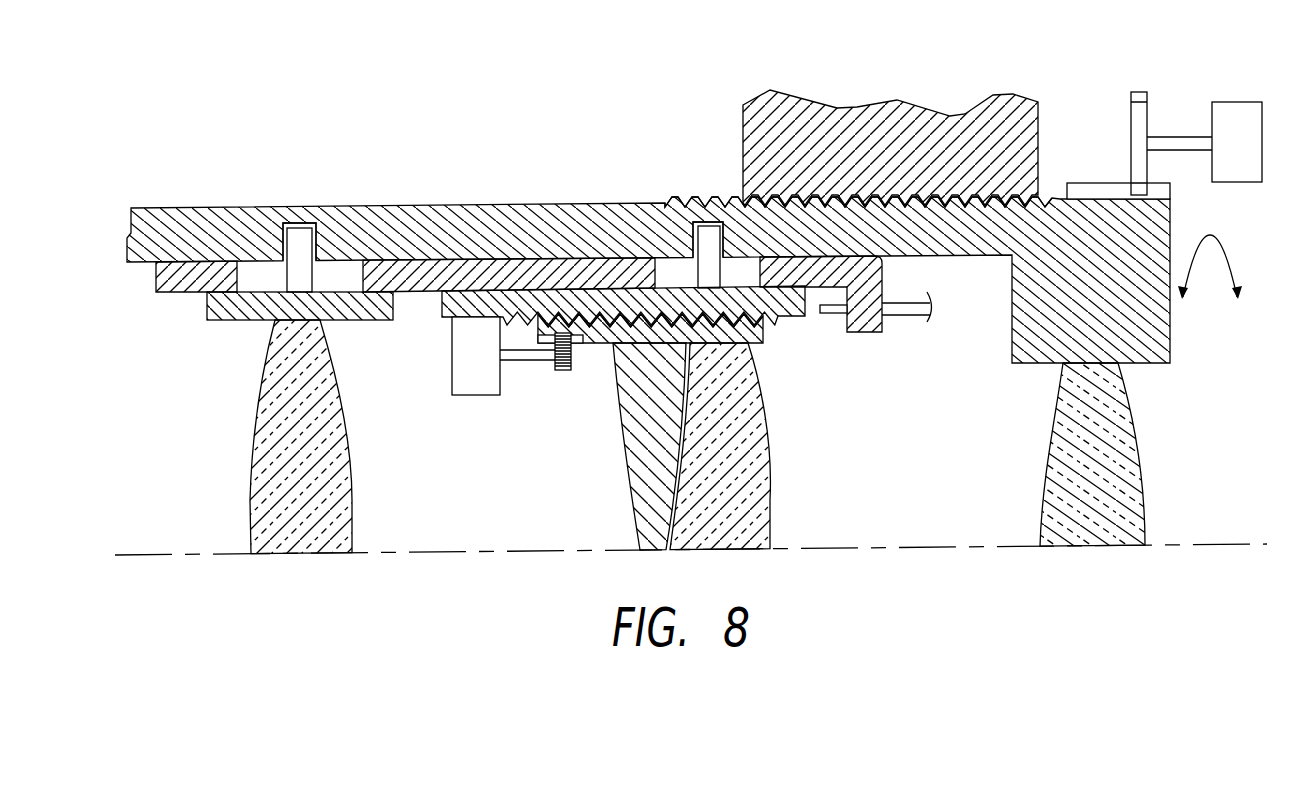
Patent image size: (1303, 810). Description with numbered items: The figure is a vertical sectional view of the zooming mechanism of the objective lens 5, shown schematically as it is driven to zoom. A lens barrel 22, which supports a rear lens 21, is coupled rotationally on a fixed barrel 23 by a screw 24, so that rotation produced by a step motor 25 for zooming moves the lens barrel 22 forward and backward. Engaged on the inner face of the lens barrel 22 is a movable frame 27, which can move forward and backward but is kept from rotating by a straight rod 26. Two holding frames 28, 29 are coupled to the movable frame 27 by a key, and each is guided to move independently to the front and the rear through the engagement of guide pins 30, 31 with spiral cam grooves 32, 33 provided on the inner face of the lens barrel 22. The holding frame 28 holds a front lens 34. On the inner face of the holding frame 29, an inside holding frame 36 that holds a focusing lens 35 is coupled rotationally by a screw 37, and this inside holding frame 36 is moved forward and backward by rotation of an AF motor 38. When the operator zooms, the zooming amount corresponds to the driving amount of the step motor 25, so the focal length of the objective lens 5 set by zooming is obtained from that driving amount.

The objective lens 5 is at (576, 84).
The rear lens 21 is at (1147, 462).
The lens barrel 22 is at (182, 207).
The fixed barrel 23 is at (857, 106).
The screw 24 is at (733, 196).
The step motor 25 is at (1232, 100).
The straight rod 26 is at (901, 315).
The movable frame 27 is at (175, 295).
The holding frame 28 is at (243, 322).
The holding frame 29 is at (800, 313).
The guide pin 30 is at (299, 237).
The guide pin 31 is at (712, 233).
The spiral cam groove 32 is at (283, 240).
The spiral cam groove 33 is at (690, 238).
The front lens 34 is at (353, 490).
The focusing lens 35 is at (777, 507).
The inside holding frame 36 is at (600, 345).
The screw 37 is at (773, 316).
The AF motor 38 is at (470, 396).